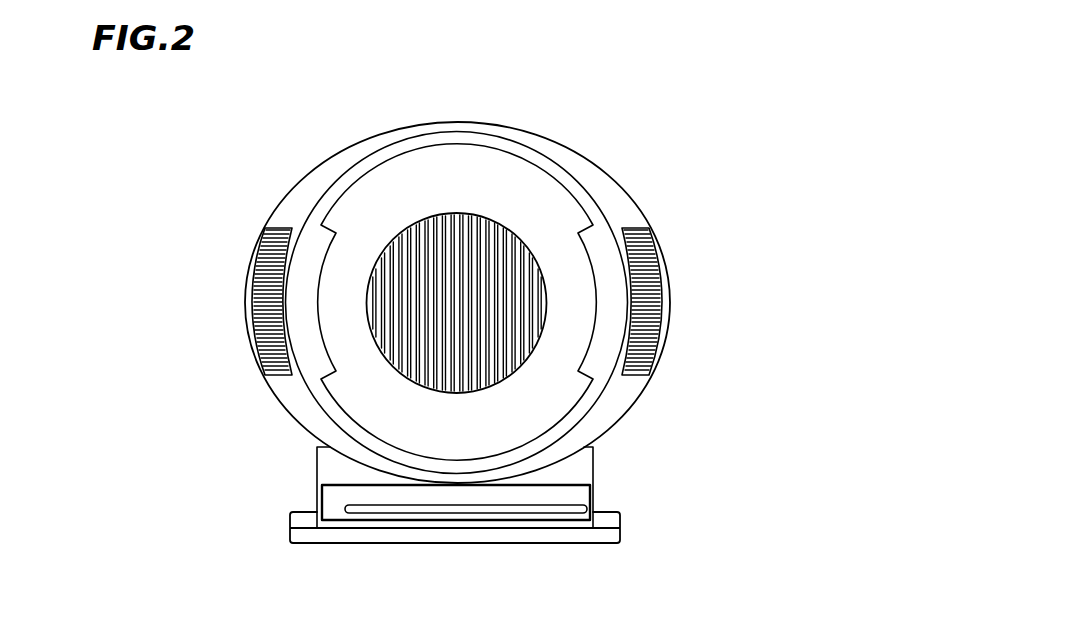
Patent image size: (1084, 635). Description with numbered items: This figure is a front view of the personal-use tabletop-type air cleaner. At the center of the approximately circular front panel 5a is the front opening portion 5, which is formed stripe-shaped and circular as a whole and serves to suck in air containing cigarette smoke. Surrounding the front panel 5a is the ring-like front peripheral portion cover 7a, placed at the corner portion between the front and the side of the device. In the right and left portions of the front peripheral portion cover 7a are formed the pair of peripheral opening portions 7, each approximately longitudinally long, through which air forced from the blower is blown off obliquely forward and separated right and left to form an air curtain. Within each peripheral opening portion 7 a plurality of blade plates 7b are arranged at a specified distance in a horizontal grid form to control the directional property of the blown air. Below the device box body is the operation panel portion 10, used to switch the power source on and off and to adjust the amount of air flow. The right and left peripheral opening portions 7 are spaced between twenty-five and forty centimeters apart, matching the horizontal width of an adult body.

The front opening portion 5 is at (468, 270).
The front panel 5a is at (552, 392).
The peripheral opening portion 7 is at (256, 285).
The front peripheral portion cover 7a is at (355, 150).
The blade plate 7b is at (257, 348).
The operation panel portion 10 is at (510, 512).